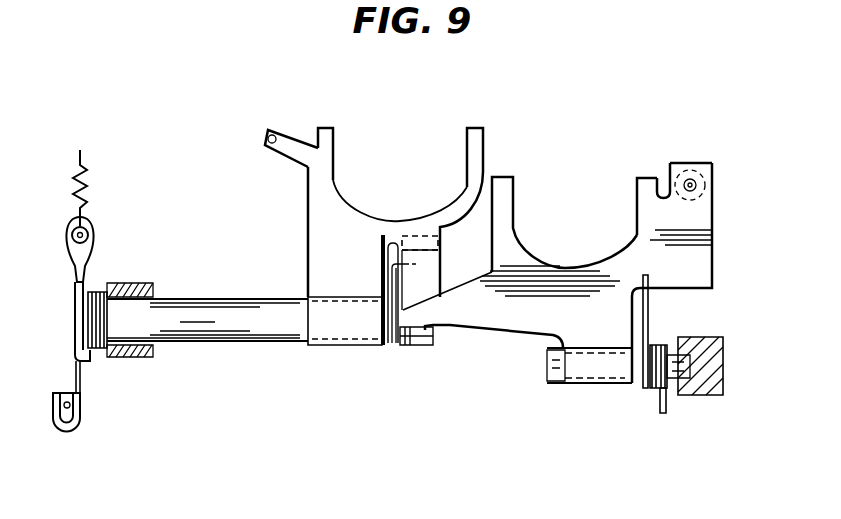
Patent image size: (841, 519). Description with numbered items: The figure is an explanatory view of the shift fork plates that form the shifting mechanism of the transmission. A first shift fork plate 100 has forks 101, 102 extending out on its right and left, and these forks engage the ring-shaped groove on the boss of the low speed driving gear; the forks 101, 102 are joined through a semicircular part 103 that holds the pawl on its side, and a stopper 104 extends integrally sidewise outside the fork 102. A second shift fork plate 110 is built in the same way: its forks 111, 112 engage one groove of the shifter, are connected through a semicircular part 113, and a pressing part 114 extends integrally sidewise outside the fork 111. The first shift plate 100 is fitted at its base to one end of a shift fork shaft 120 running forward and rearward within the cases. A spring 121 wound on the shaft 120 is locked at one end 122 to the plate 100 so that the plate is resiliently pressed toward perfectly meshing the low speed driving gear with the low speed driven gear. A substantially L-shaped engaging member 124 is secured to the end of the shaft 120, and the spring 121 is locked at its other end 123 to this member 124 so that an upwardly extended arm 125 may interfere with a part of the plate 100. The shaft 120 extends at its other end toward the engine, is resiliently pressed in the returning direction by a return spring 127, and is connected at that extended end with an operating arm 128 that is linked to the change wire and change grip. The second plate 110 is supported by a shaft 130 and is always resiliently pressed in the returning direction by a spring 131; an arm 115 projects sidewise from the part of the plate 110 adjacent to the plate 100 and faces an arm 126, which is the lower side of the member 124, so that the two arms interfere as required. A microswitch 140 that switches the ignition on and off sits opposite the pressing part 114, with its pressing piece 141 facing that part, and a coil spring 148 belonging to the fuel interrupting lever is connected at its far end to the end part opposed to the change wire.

The first shift fork plate 100 is at (338, 241).
The fork 101 is at (476, 128).
The fork 102 is at (325, 134).
The semicircular part 103 is at (357, 206).
The stopper 104 is at (282, 146).
The second shift fork plate 110 is at (535, 281).
The fork 111 is at (652, 180).
The fork 112 is at (505, 177).
The semicircular part 113 is at (616, 254).
The pressing part 114 is at (686, 170).
The arm 115 is at (452, 332).
The shift fork shaft 120 is at (215, 340).
The spring 121 is at (385, 350).
The one end of spring 122 is at (382, 240).
The other end of spring 123 is at (390, 282).
The engaging member 124 is at (421, 283).
The arm 125 is at (418, 236).
The arm 126 is at (408, 348).
The return spring 127 is at (88, 362).
The operating arm 128 is at (86, 283).
The shaft 130 is at (548, 384).
The spring 131 is at (650, 308).
The microswitch 140 is at (704, 198).
The pressing piece 141 is at (697, 182).
The coil spring 148 is at (86, 174).